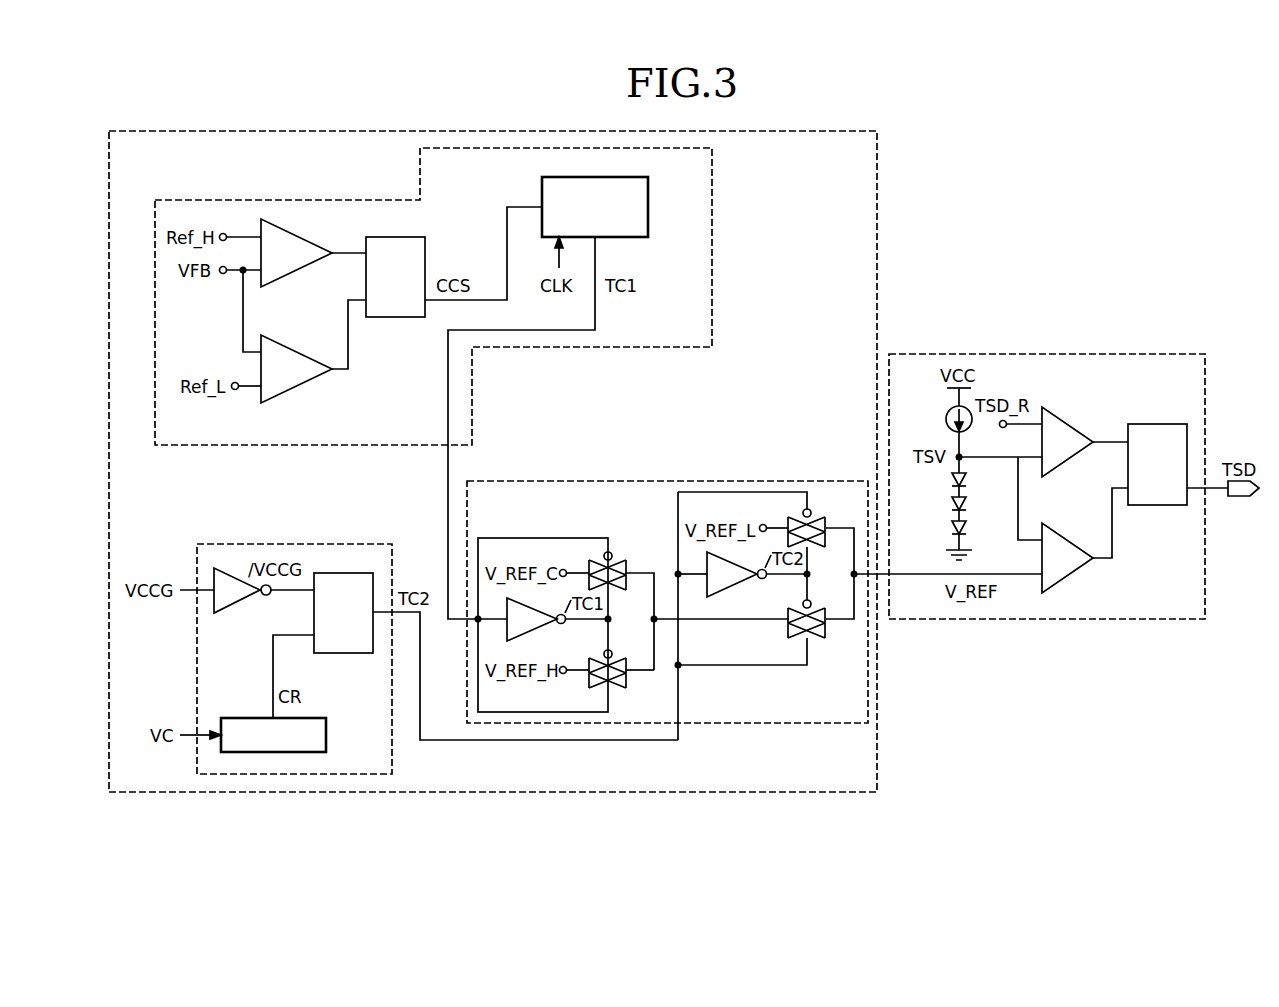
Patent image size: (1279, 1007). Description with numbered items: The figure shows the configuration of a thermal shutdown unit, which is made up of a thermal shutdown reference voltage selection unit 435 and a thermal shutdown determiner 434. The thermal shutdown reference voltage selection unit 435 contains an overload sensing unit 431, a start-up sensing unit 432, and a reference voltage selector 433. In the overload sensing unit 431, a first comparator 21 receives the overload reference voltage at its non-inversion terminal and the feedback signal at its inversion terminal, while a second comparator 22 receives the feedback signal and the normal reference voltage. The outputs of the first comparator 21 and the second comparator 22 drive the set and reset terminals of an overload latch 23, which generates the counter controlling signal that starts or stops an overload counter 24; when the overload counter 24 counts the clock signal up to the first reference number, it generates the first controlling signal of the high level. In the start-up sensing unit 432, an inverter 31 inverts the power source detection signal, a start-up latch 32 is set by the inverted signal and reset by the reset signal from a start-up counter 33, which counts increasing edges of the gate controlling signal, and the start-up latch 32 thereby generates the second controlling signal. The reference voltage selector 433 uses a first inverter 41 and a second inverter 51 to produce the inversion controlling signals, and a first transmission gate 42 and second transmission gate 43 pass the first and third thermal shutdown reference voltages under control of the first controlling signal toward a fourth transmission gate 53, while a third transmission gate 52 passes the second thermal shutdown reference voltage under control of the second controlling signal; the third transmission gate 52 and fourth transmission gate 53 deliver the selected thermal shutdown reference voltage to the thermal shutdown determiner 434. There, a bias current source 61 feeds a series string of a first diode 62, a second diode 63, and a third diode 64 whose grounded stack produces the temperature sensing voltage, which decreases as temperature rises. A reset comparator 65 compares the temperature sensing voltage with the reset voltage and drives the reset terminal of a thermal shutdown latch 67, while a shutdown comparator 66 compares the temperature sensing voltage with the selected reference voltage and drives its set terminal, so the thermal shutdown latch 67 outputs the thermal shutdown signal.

The first comparator 21 is at (293, 273).
The second comparator 22 is at (293, 389).
The overload latch 23 is at (395, 317).
The overload counter 24 is at (648, 207).
The inverter 31 is at (236, 603).
The start-up latch 32 is at (357, 653).
The start-up counter 33 is at (326, 735).
The first inverter 41 is at (530, 632).
The first transmission gate 42 is at (622, 563).
The second transmission gate 43 is at (626, 682).
The second inverter 51 is at (735, 590).
The third transmission gate 52 is at (825, 520).
The fourth transmission gate 53 is at (825, 633).
The bias current source 61 is at (946, 417).
The first diode 62 is at (951, 481).
The second diode 63 is at (967, 503).
The third diode 64 is at (951, 528).
The reset comparator 65 is at (1066, 468).
The shutdown comparator 66 is at (1068, 585).
The thermal shutdown latch 67 is at (1160, 505).
The overload sensing unit 431 is at (712, 245).
The start-up sensing unit 432 is at (347, 544).
The reference voltage selector 433 is at (755, 481).
The thermal shutdown determiner 434 is at (1065, 619).
The thermal shutdown reference voltage selection unit 435 is at (877, 207).